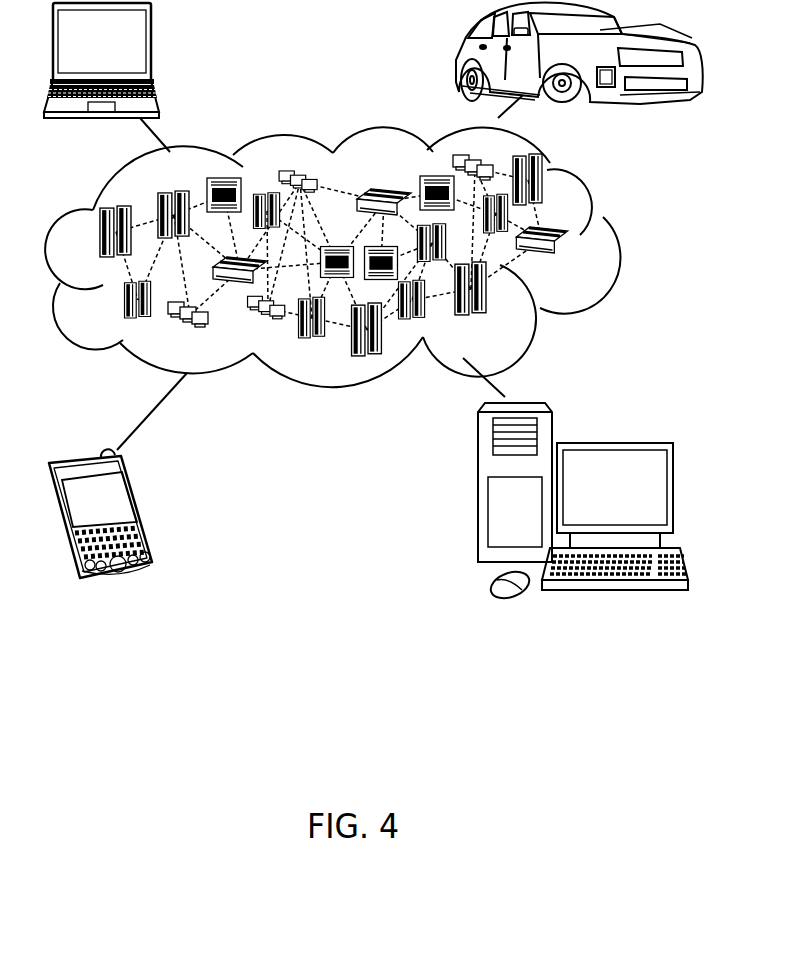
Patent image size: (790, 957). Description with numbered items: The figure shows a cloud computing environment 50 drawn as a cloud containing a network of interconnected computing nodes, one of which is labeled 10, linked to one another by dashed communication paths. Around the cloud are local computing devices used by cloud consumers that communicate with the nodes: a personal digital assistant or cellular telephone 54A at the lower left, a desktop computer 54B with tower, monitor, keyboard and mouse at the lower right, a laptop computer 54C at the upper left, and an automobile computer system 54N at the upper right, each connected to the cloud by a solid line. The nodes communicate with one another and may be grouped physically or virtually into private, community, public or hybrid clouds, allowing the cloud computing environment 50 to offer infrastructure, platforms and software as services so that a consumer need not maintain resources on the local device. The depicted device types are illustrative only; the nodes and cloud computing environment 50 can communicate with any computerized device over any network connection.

The cloud computing node 10 is at (602, 283).
The cloud computing environment 50 is at (613, 240).
The personal digital assistant or cellular telephone 54A is at (143, 508).
The desktop computer 54B is at (612, 443).
The laptop computer 54C is at (152, 47).
The automobile computer system 54N is at (457, 58).